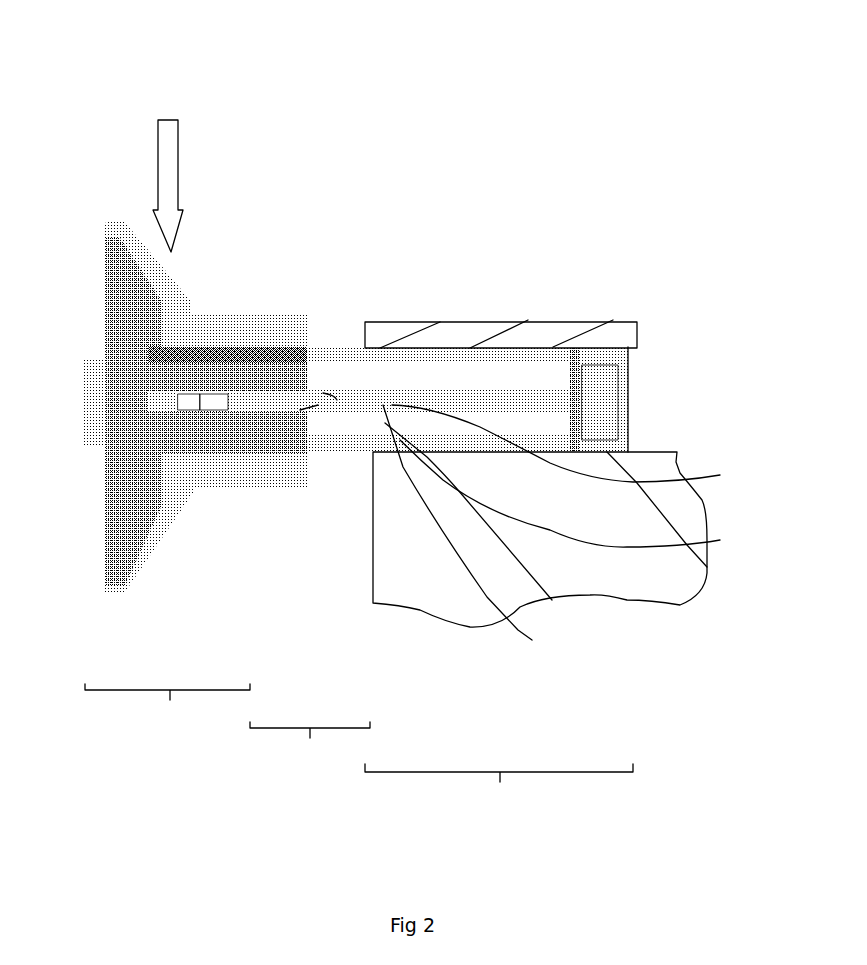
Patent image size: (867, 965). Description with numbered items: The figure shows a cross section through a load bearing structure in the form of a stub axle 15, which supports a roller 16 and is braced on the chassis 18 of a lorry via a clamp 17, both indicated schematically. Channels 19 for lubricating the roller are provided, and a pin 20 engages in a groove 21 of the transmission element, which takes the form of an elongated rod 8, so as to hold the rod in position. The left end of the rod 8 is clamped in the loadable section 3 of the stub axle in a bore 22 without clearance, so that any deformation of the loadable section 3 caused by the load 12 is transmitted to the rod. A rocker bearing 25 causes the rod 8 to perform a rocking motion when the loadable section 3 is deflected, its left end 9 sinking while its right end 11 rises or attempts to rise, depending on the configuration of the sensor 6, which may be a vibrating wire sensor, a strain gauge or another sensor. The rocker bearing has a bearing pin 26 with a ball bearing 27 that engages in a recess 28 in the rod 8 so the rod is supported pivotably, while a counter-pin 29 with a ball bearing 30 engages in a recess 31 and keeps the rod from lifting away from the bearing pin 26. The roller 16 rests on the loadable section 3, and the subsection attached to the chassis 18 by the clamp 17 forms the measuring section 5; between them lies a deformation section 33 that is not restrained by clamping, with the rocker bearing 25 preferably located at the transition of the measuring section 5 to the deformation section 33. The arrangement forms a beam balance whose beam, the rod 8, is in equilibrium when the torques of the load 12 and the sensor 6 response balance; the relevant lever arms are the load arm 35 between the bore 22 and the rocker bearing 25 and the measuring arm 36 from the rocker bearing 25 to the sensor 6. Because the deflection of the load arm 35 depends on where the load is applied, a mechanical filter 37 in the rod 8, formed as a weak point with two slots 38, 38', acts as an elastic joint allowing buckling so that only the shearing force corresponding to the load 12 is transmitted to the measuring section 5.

The stub axle 15 is at (50, 342).
The load 12 is at (165, 178).
The roller 16 is at (123, 318).
The channels 19 is at (110, 445).
The pin 20 is at (202, 373).
The groove 21 is at (213, 404).
The bore 22 is at (185, 402).
The left end 9 is at (190, 407).
The load arm 35 is at (273, 402).
The mechanical filter 37 is at (323, 379).
The counter-pin 29 is at (381, 378).
The ball bearing 30 is at (387, 345).
The recess 31 is at (390, 393).
The measuring arm 36 is at (472, 407).
The clamp 17 is at (505, 345).
The rod 8 is at (517, 400).
The right end 11 is at (551, 398).
The sensor 6 is at (612, 372).
The chassis 18 is at (625, 572).
The recess 28 is at (577, 444).
The ball bearing 27 is at (581, 496).
The bearing pin 26 is at (467, 541).
The rocker bearing 25 is at (367, 425).
The slot 38' is at (284, 486).
The slot 38 is at (311, 476).
The loadable section 3 is at (167, 709).
The deformation section 33 is at (310, 747).
The measuring section 5 is at (499, 789).